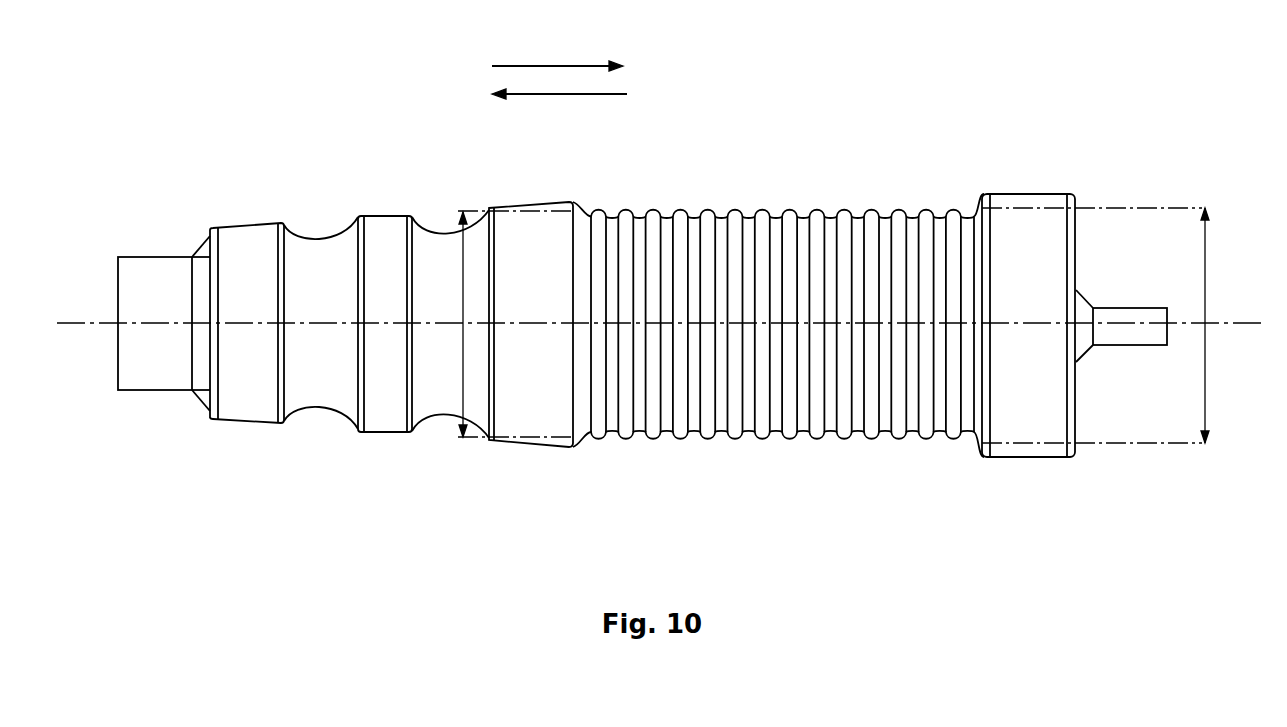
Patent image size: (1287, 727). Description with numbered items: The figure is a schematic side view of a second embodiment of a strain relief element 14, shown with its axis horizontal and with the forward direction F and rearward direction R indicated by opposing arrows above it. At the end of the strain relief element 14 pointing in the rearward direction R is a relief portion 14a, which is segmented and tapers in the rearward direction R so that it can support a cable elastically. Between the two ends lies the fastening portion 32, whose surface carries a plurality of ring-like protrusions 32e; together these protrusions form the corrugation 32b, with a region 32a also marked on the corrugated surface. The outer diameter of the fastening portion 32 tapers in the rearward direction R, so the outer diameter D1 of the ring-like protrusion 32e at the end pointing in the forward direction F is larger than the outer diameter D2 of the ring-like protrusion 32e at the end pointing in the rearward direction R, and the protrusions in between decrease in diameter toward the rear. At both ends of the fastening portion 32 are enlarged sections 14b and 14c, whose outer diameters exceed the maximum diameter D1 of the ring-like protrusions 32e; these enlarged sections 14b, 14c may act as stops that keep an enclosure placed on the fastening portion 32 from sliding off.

The strain relief element 14 is at (694, 72).
The relief portion 14a is at (388, 205).
The enlarged section 14b is at (553, 442).
The enlarged section 14c is at (1035, 450).
The fastening portion 32 is at (786, 485).
The first rib portion 32a is at (764, 200).
The corrugation 32b is at (898, 208).
The ring-like protrusion 32e is at (600, 430).
The outer diameter D1 is at (1207, 320).
The outer diameter D2 is at (461, 408).
The forward direction F is at (557, 67).
The rearward direction R is at (557, 95).